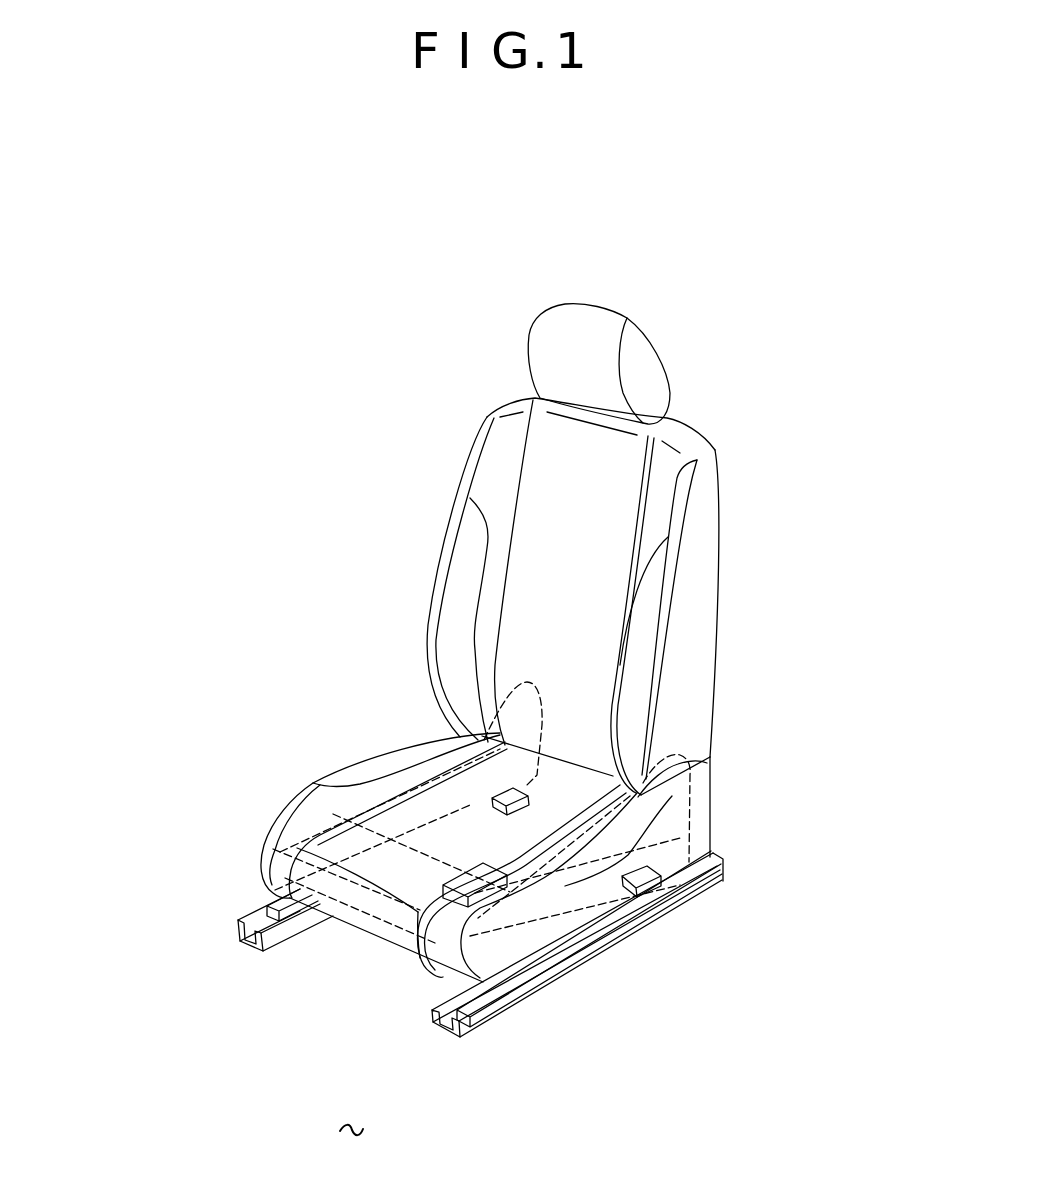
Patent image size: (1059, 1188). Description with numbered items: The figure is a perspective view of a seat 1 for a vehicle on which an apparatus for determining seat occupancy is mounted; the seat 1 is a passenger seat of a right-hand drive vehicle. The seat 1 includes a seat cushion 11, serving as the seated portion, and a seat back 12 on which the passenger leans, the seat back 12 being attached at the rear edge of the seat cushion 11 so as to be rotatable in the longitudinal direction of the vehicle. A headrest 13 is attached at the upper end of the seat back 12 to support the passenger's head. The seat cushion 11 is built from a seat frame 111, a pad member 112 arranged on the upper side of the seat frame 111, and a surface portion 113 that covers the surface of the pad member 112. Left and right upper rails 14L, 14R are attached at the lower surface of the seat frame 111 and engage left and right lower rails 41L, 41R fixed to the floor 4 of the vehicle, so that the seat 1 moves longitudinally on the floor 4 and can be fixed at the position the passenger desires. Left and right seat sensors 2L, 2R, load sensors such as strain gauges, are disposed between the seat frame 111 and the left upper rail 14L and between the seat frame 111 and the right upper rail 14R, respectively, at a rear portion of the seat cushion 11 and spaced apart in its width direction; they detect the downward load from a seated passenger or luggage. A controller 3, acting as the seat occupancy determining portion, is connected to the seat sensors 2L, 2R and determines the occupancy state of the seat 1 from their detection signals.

The seat 1 is at (377, 228).
The seat cushion 11 is at (352, 916).
The seat back 12 is at (472, 462).
The headrest 13 is at (604, 316).
The seat frame 111 is at (608, 930).
The pad member 112 is at (367, 773).
The surface portion 113 is at (306, 790).
The right seat sensor 2R is at (490, 797).
The left seat sensor 2L is at (676, 895).
The controller 3 is at (520, 952).
The right upper rail 14R is at (277, 905).
The left upper rail 14L is at (478, 988).
The right lower rail 41R is at (270, 915).
The left lower rail 41L is at (517, 998).
The floor 4 is at (351, 1110).